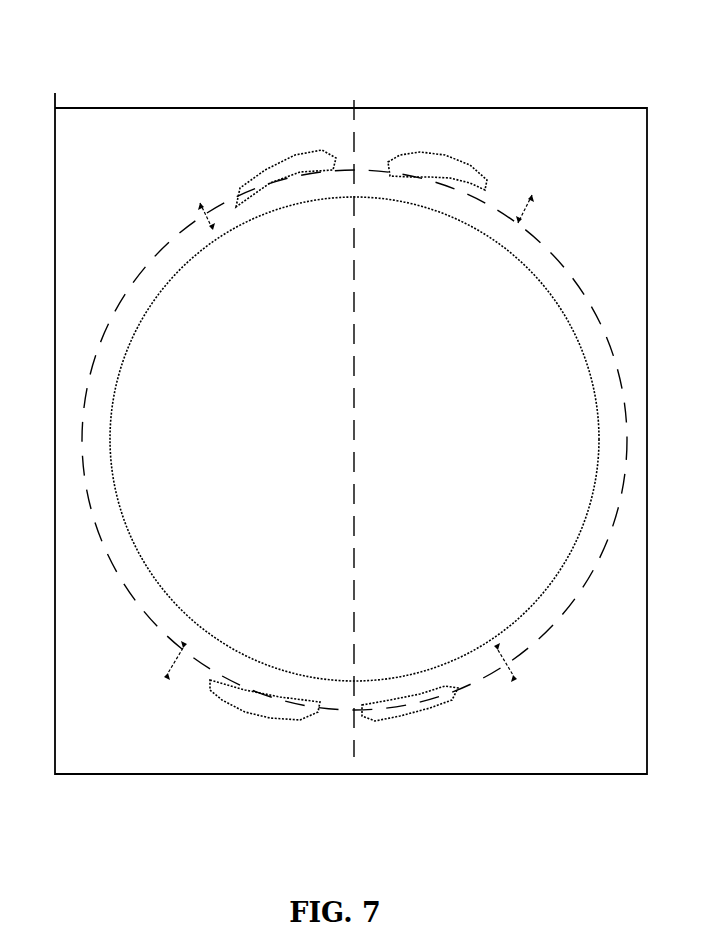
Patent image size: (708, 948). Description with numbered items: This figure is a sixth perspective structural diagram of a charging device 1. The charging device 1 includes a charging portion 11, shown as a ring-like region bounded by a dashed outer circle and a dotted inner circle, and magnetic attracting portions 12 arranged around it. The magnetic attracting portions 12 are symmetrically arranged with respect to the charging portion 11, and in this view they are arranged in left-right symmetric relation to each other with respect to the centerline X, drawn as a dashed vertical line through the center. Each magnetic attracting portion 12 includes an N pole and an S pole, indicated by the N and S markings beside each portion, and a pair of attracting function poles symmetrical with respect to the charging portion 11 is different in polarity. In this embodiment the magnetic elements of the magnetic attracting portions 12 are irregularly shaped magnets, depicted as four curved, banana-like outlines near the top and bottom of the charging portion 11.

The charging device 1 is at (111, 70).
The charging portion 11 is at (528, 305).
The magnetic attracting portions 12 is at (440, 176).